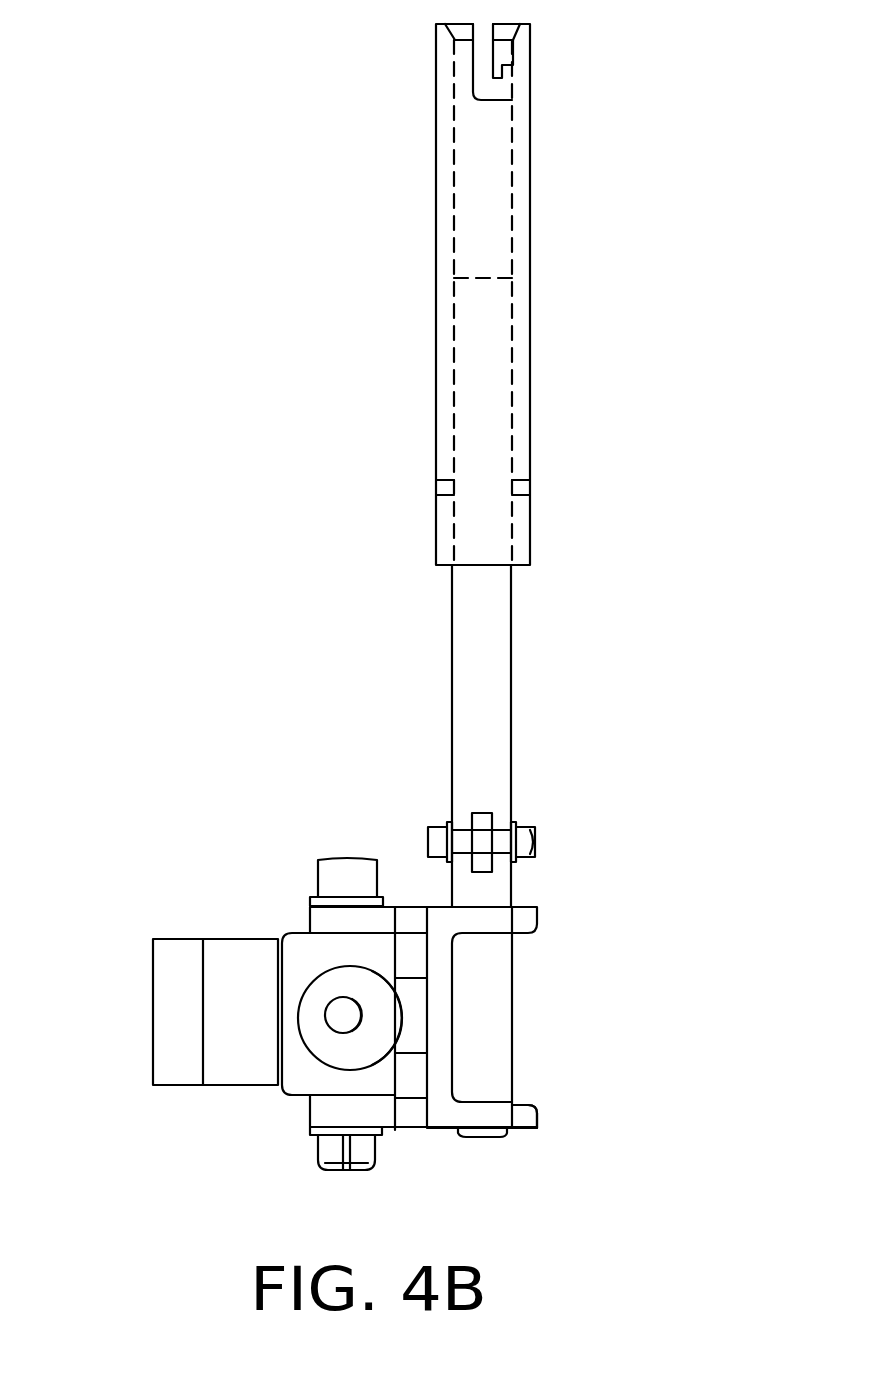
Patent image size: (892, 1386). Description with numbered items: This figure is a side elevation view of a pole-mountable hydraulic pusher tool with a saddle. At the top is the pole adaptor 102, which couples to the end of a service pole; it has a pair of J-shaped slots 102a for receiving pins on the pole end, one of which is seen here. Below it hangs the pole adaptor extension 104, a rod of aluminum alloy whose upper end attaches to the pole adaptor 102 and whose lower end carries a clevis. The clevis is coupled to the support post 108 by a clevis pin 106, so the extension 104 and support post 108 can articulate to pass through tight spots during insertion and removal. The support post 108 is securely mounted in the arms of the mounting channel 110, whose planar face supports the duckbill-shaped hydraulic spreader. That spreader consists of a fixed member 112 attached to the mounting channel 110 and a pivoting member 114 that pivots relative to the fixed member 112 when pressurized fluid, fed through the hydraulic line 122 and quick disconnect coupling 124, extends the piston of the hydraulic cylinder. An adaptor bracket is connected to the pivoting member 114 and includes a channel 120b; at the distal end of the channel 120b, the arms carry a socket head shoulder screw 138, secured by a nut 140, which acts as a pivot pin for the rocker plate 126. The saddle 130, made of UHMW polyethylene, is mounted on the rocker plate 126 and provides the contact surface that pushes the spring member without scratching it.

The pole adaptor 102 is at (532, 220).
The J-shaped slot 102a is at (497, 92).
The pole adaptor extension 104 is at (513, 712).
The clevis pin 106 is at (427, 838).
The support post 108 is at (513, 887).
The mounting channel 110 is at (537, 1118).
The fixed member 112 is at (412, 1070).
The pivoting member 114 is at (302, 937).
The channel 120b is at (407, 1117).
The hydraulic line 122 is at (340, 1027).
The quick disconnect coupling 124 is at (383, 997).
The rocker plate 126 is at (165, 1031).
The saddle 130 is at (242, 1070).
The socket head shoulder screw 138 is at (328, 873).
The nut 140 is at (325, 1147).